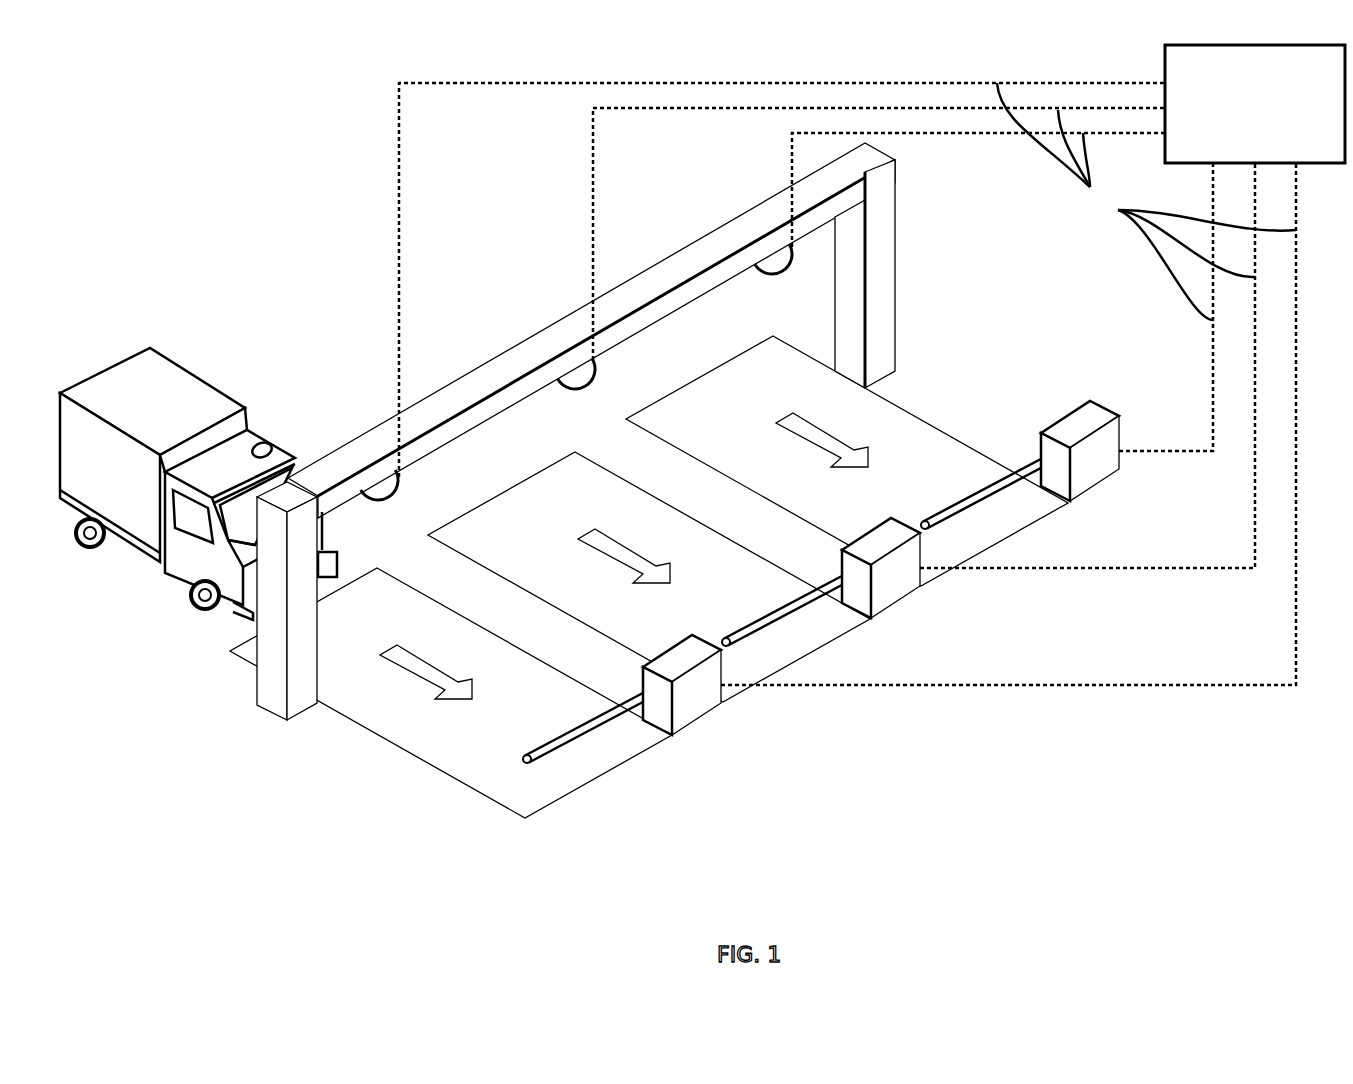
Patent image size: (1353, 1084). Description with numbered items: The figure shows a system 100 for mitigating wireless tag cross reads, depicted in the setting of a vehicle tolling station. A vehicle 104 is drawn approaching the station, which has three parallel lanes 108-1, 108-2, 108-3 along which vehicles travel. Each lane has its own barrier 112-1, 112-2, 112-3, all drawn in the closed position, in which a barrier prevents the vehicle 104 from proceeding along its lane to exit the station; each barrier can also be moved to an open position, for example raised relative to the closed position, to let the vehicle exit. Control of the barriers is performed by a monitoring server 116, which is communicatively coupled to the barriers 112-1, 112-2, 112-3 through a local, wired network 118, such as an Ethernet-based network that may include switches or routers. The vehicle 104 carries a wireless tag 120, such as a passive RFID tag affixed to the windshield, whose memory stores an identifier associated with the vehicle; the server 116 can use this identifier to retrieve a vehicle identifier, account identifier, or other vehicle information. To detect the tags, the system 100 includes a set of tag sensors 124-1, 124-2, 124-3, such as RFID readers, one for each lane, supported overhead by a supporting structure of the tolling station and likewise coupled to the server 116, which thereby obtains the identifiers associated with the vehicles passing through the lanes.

The system 100 is at (203, 135).
The vehicle 104 is at (150, 378).
The lane 108-1 is at (450, 757).
The lane 108-2 is at (538, 497).
The lane 108-3 is at (893, 425).
The barrier 112-1 is at (597, 720).
The barrier 112-2 is at (797, 608).
The barrier 112-3 is at (1000, 490).
The monitoring server 116 is at (1255, 104).
The network 118 is at (1146, 201).
The wireless tag 120 is at (265, 443).
The tag sensor 124-1 is at (375, 478).
The tag sensor 124-2 is at (575, 365).
The tag sensor 124-3 is at (772, 255).